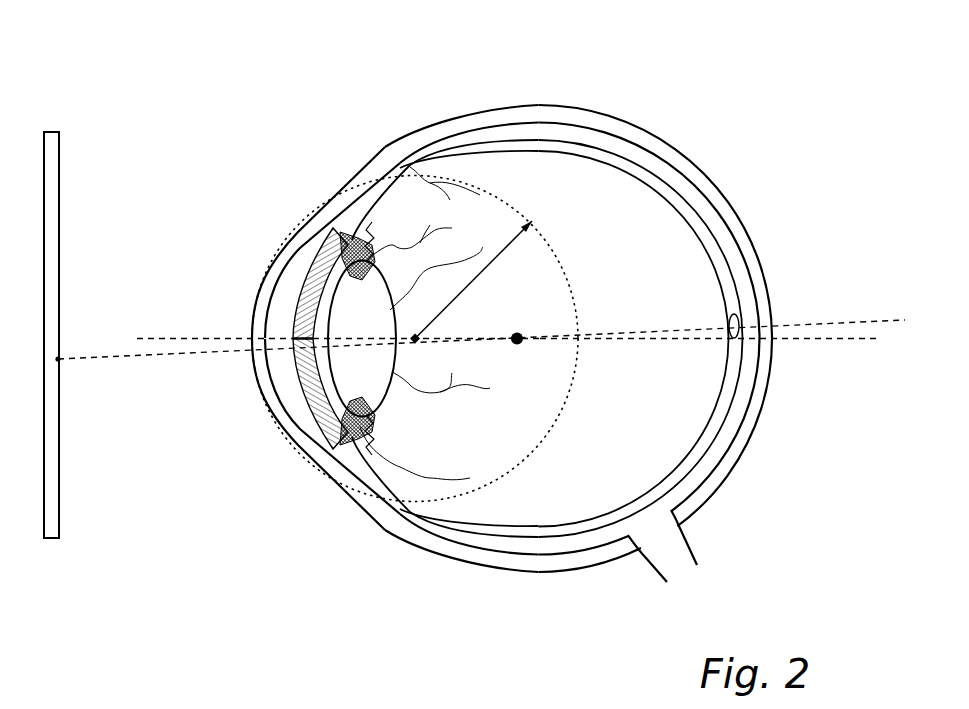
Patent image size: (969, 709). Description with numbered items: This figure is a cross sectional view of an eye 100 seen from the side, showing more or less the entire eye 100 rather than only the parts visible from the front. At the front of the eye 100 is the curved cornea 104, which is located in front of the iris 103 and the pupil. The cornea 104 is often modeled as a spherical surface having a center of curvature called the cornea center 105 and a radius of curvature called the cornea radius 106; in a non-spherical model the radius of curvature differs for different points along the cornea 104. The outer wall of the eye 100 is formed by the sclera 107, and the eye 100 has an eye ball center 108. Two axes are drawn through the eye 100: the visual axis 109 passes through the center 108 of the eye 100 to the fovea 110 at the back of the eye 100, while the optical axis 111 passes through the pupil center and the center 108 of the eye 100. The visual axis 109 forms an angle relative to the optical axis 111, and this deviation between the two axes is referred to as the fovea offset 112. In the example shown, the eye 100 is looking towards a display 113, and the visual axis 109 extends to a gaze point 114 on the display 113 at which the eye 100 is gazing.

The eye 100 is at (213, 100).
The iris 103 is at (296, 288).
The cornea 104 is at (292, 443).
The cornea center 105 is at (415, 340).
The cornea radius 106 is at (475, 277).
The sclera 107 is at (590, 107).
The eye ball center 108 is at (517, 341).
The visual axis 109 is at (176, 355).
The fovea 110 is at (737, 340).
The optical axis 111 is at (149, 336).
The fovea offset 112 is at (805, 339).
The display 113 is at (61, 165).
The gaze point 114 is at (61, 362).